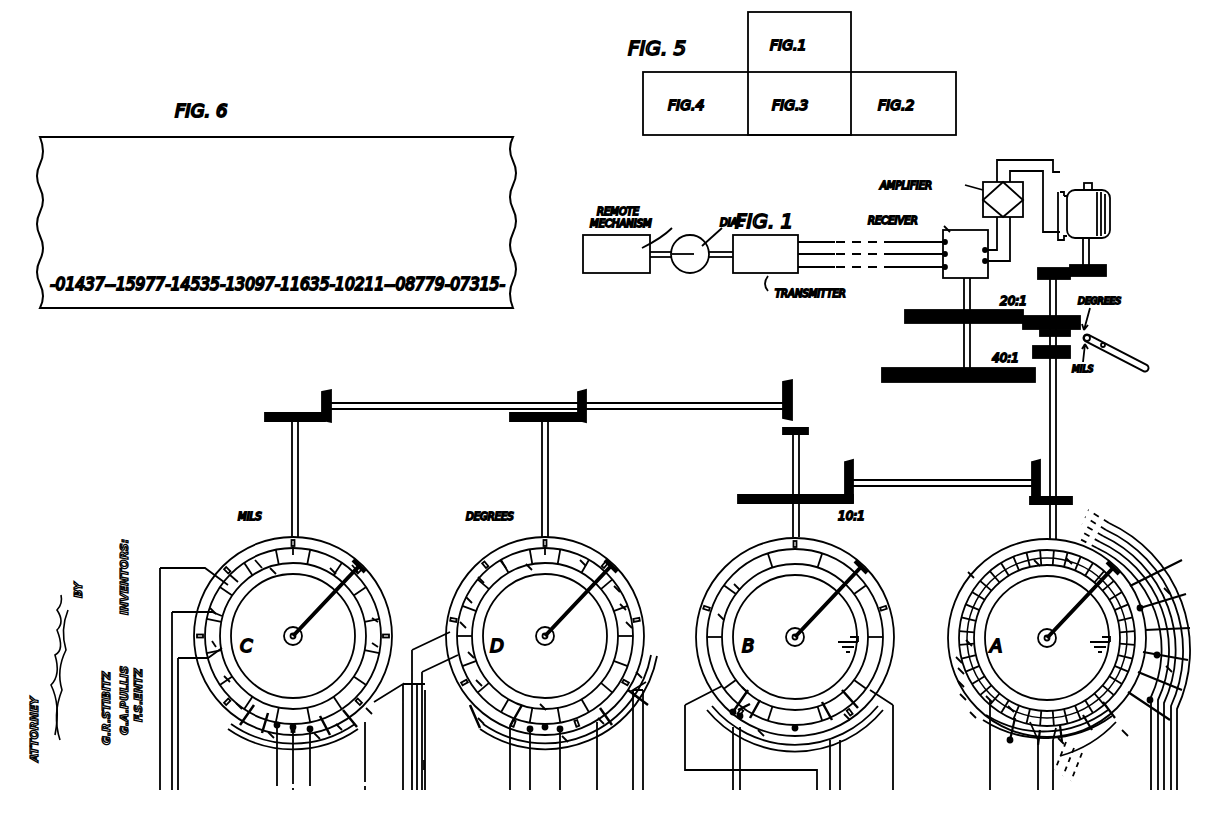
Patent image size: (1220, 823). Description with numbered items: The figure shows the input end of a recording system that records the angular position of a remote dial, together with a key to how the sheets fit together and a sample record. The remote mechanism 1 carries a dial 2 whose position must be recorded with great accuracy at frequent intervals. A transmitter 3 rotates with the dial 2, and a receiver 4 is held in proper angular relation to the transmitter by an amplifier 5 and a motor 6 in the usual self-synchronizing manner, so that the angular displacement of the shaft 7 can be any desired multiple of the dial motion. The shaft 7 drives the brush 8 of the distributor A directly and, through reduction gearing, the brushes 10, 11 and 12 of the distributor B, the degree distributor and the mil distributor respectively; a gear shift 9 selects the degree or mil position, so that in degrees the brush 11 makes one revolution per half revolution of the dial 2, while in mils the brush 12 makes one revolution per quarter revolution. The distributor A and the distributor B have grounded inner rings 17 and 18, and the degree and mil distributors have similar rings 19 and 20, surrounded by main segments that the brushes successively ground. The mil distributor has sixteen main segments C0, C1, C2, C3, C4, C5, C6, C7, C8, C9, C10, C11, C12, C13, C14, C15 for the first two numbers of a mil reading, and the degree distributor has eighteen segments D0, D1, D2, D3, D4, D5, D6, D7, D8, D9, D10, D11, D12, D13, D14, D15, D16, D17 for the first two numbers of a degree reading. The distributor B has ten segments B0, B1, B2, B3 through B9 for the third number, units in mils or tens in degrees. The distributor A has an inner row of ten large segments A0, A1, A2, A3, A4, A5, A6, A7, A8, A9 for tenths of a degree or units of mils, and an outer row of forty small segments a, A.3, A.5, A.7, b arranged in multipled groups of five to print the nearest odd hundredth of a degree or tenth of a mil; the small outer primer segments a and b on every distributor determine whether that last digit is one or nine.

The remote mechanism 1 is at (612, 273).
The dial 2 is at (688, 273).
The transmitter 3 is at (758, 273).
The receiver 4 is at (946, 277).
The amplifier 5 is at (983, 198).
The motor 6 is at (1110, 216).
The shaft 7 is at (1056, 416).
The brush 8 is at (1070, 606).
The gear shift 9 is at (1122, 358).
The brush 10 is at (830, 602).
The brush 11 is at (578, 600).
The brush 12 is at (314, 606).
The inner ring 17 is at (1068, 700).
The inner ring 18 is at (814, 700).
The ring 19 is at (564, 700).
The ring 20 is at (312, 700).
The main segment C0 is at (212, 611).
The main segment C1 is at (214, 644).
The main segment C2 is at (230, 680).
The main segment C3 is at (238, 707).
The main segment C4 is at (270, 735).
The main segment C5 is at (318, 738).
The main segment C6 is at (340, 728).
The main segment C7 is at (370, 712).
The main segment C8 is at (372, 645).
The main segment C9 is at (372, 620).
The main segment C10 is at (360, 570).
The main segment C11 is at (335, 572).
The main segment C12 is at (308, 552).
The main segment C13 is at (276, 572).
The main segment C14 is at (260, 564).
The main segment C15 is at (232, 576).
The main segment D0 is at (566, 740).
The main segment D1 is at (602, 722).
The main segment D2 is at (636, 696).
The main segment D3 is at (640, 676).
The main segment D4 is at (628, 626).
The main segment D5 is at (622, 608).
The main segment D6 is at (616, 590).
The main segment D7 is at (586, 562).
The main segment D8 is at (560, 552).
The main segment D9 is at (530, 568).
The main segment D10 is at (504, 568).
The main segment D11 is at (480, 580).
The main segment D12 is at (468, 600).
The main segment D13 is at (462, 628).
The main segment D14 is at (470, 656).
The main segment D15 is at (478, 684).
The main segment D16 is at (480, 722).
The main segment D17 is at (548, 692).
The segment B0 is at (760, 735).
The segment B1 is at (744, 690).
The segment B2 is at (722, 618).
The segment B3 is at (738, 588).
The segment B9 is at (848, 718).
The large segment A0 is at (1062, 742).
The large segment A1 is at (1126, 732).
The large segment A2 is at (1170, 670).
The large segment A3 is at (1168, 590).
The large segment A4 is at (1070, 560).
The large segment A5 is at (1036, 562).
The large segment A6 is at (970, 574).
The large segment A7 is at (968, 644).
The large segment A8 is at (988, 700).
The large segment A9 is at (1010, 710).
The small segment A.3 is at (960, 672).
The small segment A.5 is at (960, 685).
The small segment A.7 is at (962, 698).
The primer segment a is at (940, 660).
The primer segment b is at (968, 606).
The distributor A is at (412, 764).
The distributor B is at (424, 764).